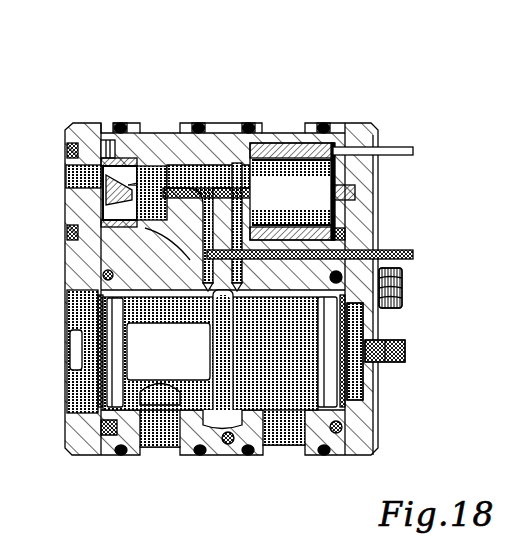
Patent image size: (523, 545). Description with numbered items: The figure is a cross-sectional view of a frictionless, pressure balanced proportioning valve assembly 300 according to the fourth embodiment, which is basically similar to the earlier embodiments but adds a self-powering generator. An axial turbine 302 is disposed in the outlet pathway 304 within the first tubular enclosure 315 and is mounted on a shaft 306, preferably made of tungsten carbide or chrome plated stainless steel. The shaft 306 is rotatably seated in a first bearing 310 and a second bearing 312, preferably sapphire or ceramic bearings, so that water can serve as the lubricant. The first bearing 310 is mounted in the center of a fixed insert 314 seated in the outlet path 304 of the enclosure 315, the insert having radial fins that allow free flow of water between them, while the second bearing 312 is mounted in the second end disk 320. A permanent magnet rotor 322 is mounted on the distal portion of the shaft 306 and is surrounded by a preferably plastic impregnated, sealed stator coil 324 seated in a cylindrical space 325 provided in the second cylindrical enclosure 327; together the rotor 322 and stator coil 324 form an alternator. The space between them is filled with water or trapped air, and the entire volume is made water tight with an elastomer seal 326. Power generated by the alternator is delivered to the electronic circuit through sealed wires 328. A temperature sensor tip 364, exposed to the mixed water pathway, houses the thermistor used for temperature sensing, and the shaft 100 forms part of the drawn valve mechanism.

The shaft 100 is at (208, 455).
The frictionless, pressure balanced proportioning valve assembly 300 is at (118, 73).
The axial turbine 302 is at (142, 160).
The outlet pathway 304 is at (68, 205).
The shaft 306 is at (205, 185).
The first bearing 310 is at (68, 165).
The second bearing 312 is at (358, 197).
The fixed insert 314 is at (114, 158).
The first tubular enclosure 315 is at (137, 124).
The second end disk 320 is at (366, 127).
The permanent magnet rotor 322 is at (328, 182).
The stator coil 324 is at (290, 147).
The cylindrical space 325 is at (270, 143).
The elastomer seal 326 is at (410, 251).
The second cylindrical enclosure 327 is at (333, 128).
The sealed wires 328 is at (395, 148).
The temperature sensor tip 364 is at (180, 243).